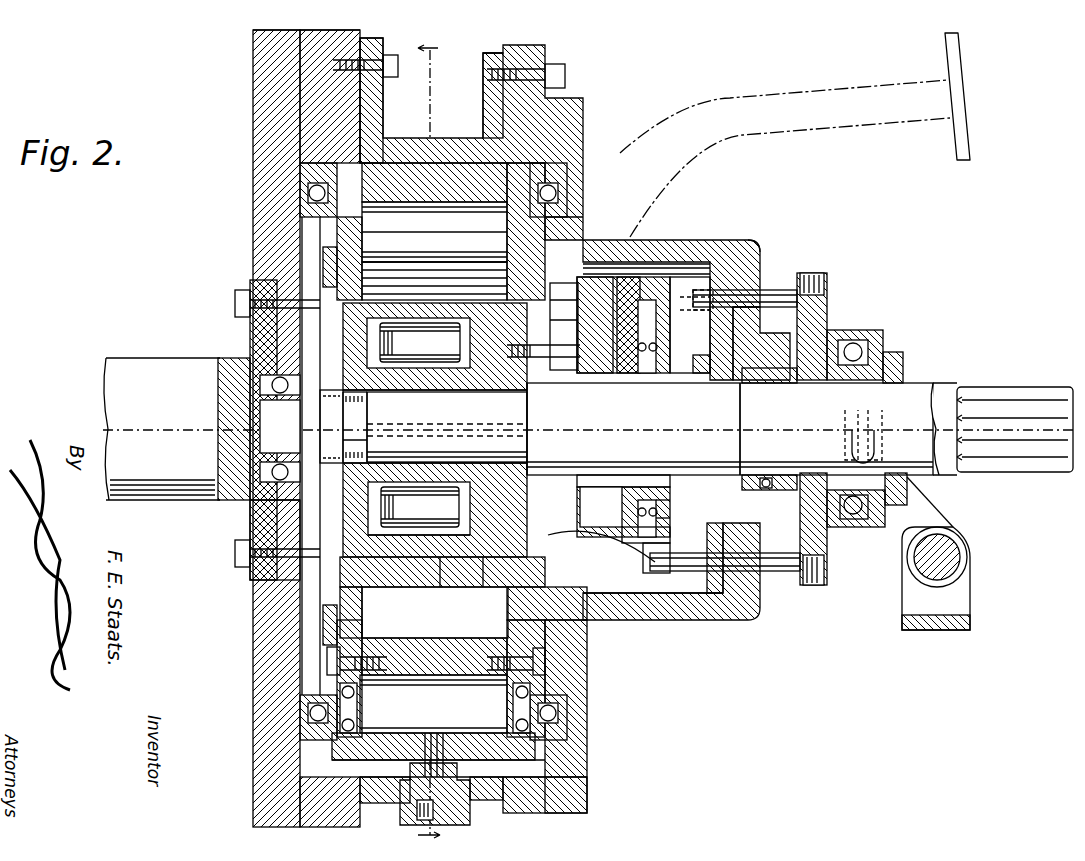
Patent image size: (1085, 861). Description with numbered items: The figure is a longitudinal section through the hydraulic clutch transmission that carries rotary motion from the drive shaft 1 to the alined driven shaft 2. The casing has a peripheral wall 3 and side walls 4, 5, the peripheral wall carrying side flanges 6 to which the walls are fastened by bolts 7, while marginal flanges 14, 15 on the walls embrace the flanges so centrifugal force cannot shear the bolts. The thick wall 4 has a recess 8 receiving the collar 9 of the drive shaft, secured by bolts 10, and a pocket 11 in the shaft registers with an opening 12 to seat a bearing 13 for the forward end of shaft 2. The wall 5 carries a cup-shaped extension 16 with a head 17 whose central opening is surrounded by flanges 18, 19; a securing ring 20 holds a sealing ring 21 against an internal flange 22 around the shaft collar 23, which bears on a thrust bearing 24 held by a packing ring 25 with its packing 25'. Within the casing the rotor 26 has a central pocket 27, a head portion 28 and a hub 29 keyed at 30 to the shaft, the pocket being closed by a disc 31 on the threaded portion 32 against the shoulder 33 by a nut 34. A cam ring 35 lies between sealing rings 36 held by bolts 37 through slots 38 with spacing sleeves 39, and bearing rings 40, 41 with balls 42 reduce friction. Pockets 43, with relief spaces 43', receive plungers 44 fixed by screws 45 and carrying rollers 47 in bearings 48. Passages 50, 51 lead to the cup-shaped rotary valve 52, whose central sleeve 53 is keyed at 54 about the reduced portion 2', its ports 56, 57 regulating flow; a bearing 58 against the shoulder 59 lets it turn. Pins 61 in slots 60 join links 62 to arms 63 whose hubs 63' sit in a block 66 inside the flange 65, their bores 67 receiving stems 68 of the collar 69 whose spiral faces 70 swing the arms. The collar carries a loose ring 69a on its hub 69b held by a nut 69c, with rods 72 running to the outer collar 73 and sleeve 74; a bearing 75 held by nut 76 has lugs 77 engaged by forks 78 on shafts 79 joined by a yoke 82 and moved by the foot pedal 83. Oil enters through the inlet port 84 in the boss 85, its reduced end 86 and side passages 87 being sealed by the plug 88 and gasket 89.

The drive shaft 1 is at (148, 352).
The driven shaft 2 is at (800, 413).
The reduced portion of the shaft 2' is at (459, 427).
The peripheral wall 3 is at (430, 138).
The side wall 4 is at (252, 122).
The side wall 5 is at (584, 112).
The side flanges 6 is at (372, 110).
The bolts 7 is at (398, 66).
The concentric recess 8 is at (272, 520).
The disc or collar 9 is at (268, 278).
The bolts 10 is at (238, 303).
The pocket 11 is at (262, 378).
The opening 12 is at (275, 503).
The bearing 13 is at (222, 452).
The marginal flange 14 is at (370, 36).
The marginal flange 15 is at (503, 47).
The cup-shaped extension 16 is at (668, 240).
The head 17 is at (762, 250).
The annular flange 18 is at (708, 340).
The annular flange 19 is at (772, 345).
The threaded securing ring 20 is at (716, 360).
The flexible sealing ring 21 is at (727, 472).
The internal flange 22 is at (803, 523).
The collar 23 is at (735, 400).
The thrust bearing 24 is at (762, 468).
The packing ring 25 is at (800, 460).
The packing 25' is at (777, 457).
The rotor 26 is at (395, 185).
The central pocket 27 is at (445, 300).
The head portion 28 is at (540, 472).
The hub or sleeve 29 is at (625, 370).
The key 30 is at (632, 345).
The cap or disc 31 is at (405, 455).
The reduced and threaded portion 32 is at (358, 415).
The shoulder 33 is at (350, 440).
The nut 34 is at (327, 413).
The cam ring 35 is at (466, 165).
The sealing rings 36 is at (596, 148).
The bolts 37 is at (338, 248).
The slots 38 is at (576, 202).
The spacing sleeves 39 is at (418, 262).
The bearing ring 40 is at (333, 177).
The bearing ring 41 is at (600, 270).
The bearing balls 42 is at (312, 192).
The pockets 43 is at (354, 623).
The spaces 43' is at (347, 436).
The plungers 44 is at (470, 656).
The bolts or screws 45 is at (588, 672).
The rollers 47 is at (402, 690).
The bearings 48 is at (606, 745).
The passage 50 is at (435, 401).
The passage 51 is at (419, 521).
The rotary valve 52 is at (447, 415).
The central sleeve 53 is at (392, 402).
The key 54 is at (465, 424).
The port 56 is at (312, 342).
The port 57 is at (435, 495).
The bearing 58 is at (445, 640).
The internal shoulder 59 is at (483, 640).
The circumferentially extending slots 60 is at (560, 348).
The pins 61 is at (550, 340).
The links 62 is at (598, 380).
The arms 63 is at (583, 561).
The hubs 63' is at (681, 590).
The annular flange 65 is at (600, 615).
The block 66 is at (612, 282).
The bores 67 is at (606, 470).
The stems 68 is at (662, 538).
The disc or collar 69 is at (630, 470).
The ring 69a is at (668, 503).
The hub 69b is at (665, 472).
The nut 69c is at (668, 518).
The spirally extending flat faces 70 is at (582, 525).
The arms or rods 72 is at (773, 290).
The disc or collar 73 is at (832, 532).
The sleeve or hub 74 is at (880, 355).
The bearing 75 is at (856, 342).
The nut 76 is at (912, 358).
The lugs 77 is at (863, 429).
The forks 78 is at (925, 520).
The shafts 79 is at (968, 556).
The yoke 82 is at (943, 632).
The foot pedal 83 is at (845, 118).
The inlet port 84 is at (480, 805).
The boss 85 is at (590, 796).
The reduced inner end portion 86 is at (443, 740).
The side passages 87 is at (375, 760).
The plug 88 is at (400, 812).
The gasket 89 is at (425, 733).